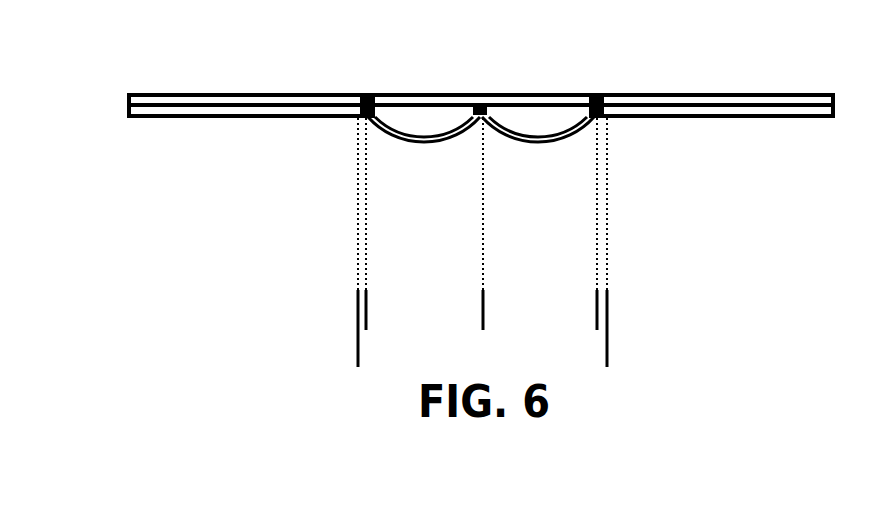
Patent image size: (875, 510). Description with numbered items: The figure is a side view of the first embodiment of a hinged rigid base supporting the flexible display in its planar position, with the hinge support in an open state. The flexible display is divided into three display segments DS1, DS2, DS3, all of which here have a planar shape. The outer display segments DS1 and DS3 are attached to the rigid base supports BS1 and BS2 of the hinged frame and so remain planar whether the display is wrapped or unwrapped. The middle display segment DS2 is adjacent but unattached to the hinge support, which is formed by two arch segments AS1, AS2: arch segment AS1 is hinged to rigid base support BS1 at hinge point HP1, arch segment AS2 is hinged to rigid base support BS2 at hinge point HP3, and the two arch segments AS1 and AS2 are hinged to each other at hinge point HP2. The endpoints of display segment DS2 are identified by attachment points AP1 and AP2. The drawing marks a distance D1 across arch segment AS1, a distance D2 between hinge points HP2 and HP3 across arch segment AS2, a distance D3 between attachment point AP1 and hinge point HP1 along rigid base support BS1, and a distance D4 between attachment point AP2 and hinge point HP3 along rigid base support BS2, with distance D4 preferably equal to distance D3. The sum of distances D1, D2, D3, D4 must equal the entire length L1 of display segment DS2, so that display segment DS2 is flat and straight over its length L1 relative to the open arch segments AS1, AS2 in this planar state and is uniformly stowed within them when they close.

The display segment DS1 is at (247, 93).
The display segment DS2 is at (483, 88).
The display segment DS3 is at (740, 90).
The rigid base support BS1 is at (225, 120).
The rigid base support BS2 is at (740, 120).
The attachment point AP1 is at (357, 93).
The attachment point AP2 is at (615, 90).
The hinge point HP1 is at (362, 122).
The hinge point HP2 is at (472, 110).
The hinge point HP3 is at (605, 120).
The arch segment AS1 is at (448, 152).
The arch segment AS2 is at (520, 152).
The distance D1 is at (472, 310).
The distance D2 is at (586, 310).
The distance D3 is at (346, 310).
The distance D4 is at (619, 310).
The length L1 is at (595, 347).